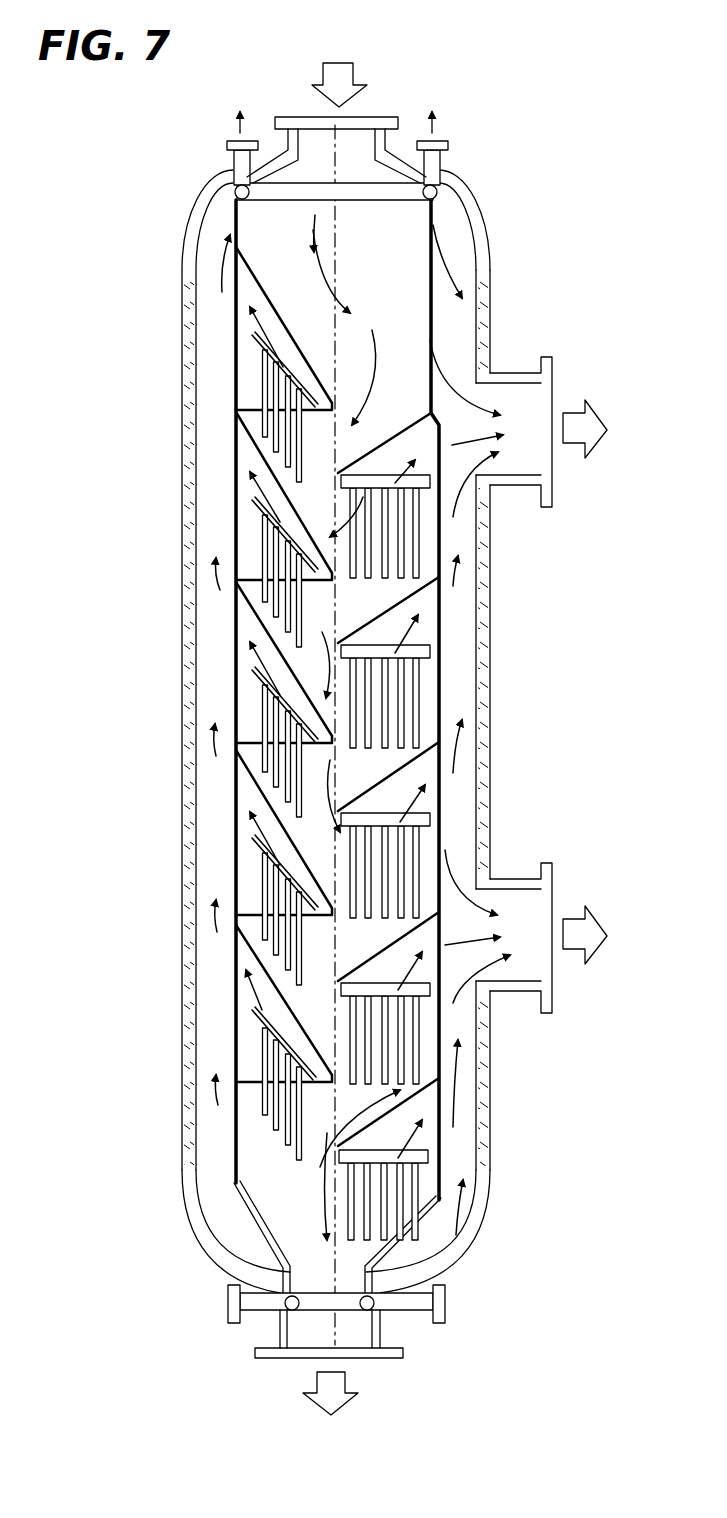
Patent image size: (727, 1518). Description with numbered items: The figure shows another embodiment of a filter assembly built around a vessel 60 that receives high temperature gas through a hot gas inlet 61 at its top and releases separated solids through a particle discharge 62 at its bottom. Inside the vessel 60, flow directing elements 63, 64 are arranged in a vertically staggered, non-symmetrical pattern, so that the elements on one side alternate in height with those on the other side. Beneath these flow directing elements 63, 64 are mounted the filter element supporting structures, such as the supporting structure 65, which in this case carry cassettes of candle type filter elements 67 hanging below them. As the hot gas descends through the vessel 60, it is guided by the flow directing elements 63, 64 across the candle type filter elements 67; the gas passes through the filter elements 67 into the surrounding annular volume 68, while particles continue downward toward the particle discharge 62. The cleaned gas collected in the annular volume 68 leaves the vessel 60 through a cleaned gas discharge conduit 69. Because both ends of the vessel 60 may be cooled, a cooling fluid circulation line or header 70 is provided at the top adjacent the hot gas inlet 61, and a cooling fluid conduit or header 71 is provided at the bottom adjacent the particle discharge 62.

The vessel 60 is at (521, 193).
The hot gas inlet 61 is at (313, 130).
The particle discharge 62 is at (305, 1343).
The flow directing element 63 is at (296, 337).
The flow directing element 64 is at (388, 446).
The filter element supporting structure 65 is at (258, 333).
The candle type filter element 67 is at (260, 737).
The annular volume 68 is at (205, 507).
The cleaned gas discharge conduit 69 is at (519, 372).
The cooling fluid circulation line/header 70 is at (444, 166).
The cooling fluid conduit/header 71 is at (402, 1318).